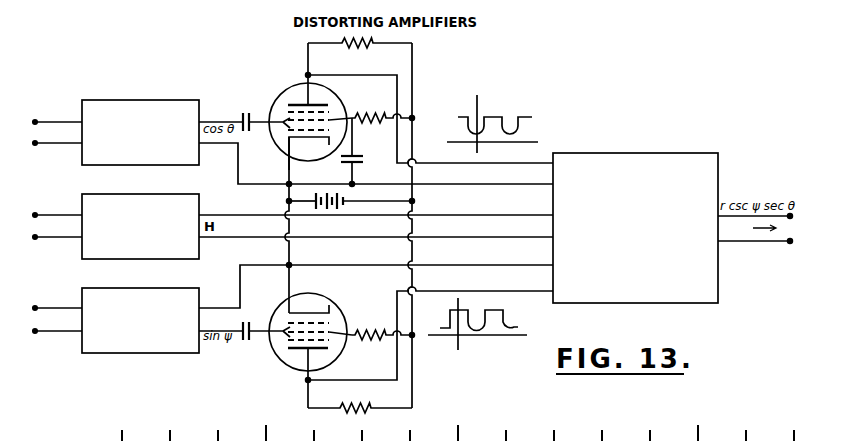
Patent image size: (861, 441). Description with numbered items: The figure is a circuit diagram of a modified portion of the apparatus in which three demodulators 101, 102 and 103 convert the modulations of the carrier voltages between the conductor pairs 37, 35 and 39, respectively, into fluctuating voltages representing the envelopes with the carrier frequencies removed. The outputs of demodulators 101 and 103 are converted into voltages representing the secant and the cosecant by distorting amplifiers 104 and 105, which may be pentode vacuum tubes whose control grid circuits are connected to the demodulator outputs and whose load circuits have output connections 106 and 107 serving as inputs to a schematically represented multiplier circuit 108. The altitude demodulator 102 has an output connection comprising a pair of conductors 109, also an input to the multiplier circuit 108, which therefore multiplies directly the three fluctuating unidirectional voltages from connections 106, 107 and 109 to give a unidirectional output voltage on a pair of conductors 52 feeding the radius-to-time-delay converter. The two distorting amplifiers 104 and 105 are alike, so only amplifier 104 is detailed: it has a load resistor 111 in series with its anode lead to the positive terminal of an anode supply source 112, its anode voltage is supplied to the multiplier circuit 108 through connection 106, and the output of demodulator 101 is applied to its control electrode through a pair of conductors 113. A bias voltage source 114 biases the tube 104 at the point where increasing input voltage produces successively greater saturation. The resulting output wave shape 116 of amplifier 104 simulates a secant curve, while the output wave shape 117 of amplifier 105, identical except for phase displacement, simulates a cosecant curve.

The conductor pair 37 is at (35, 122).
The conductor pair 39 is at (35, 215).
The conductor pair 35 is at (35, 308).
The demodulator 101 is at (150, 100).
The altitude demodulator 102 is at (172, 194).
The demodulator 103 is at (166, 288).
The distorting amplifier 104 is at (273, 93).
The distorting amplifier 105 is at (273, 313).
The output connection 106 is at (485, 176).
The output connection 107 is at (527, 277).
The multiplier circuit 108 is at (718, 165).
The pair of conductors 109 is at (538, 225).
The load resistor 111 is at (362, 48).
The anode supply source 112 is at (345, 194).
The pair of conductors 113 is at (213, 120).
The bias voltage source 114 is at (246, 131).
The output wave shape 116 is at (508, 120).
The output wave shape 117 is at (476, 334).
The pair of conductors 52 is at (733, 232).